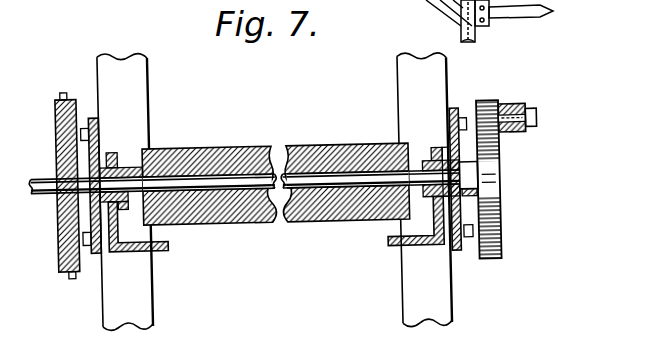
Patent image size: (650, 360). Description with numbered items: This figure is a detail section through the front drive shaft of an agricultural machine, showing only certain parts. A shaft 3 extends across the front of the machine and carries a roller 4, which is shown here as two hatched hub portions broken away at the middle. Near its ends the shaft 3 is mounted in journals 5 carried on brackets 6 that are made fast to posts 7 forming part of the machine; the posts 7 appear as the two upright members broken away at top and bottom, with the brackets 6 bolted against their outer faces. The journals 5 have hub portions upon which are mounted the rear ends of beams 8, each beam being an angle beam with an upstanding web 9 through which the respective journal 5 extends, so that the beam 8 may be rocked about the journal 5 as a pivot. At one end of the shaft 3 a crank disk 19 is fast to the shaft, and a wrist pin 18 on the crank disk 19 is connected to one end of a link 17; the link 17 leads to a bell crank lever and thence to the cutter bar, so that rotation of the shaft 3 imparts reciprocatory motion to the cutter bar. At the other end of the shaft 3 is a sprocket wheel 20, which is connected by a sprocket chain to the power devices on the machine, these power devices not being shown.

The shaft 3 is at (240, 185).
The roller 4 is at (253, 146).
The journal 5 is at (129, 156).
The bracket 6 is at (94, 111).
The post 7 is at (141, 48).
The beam 8 is at (156, 252).
The web 9 is at (441, 150).
The link 17 is at (525, 100).
The wrist pin 18 is at (539, 123).
The crank disk 19 is at (492, 196).
The sprocket wheel 20 is at (56, 258).